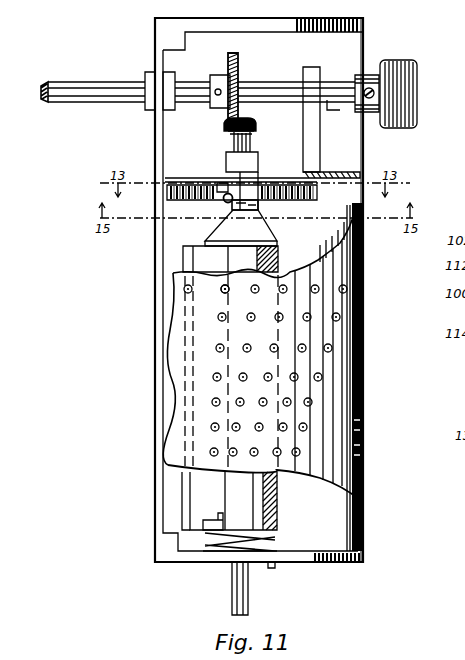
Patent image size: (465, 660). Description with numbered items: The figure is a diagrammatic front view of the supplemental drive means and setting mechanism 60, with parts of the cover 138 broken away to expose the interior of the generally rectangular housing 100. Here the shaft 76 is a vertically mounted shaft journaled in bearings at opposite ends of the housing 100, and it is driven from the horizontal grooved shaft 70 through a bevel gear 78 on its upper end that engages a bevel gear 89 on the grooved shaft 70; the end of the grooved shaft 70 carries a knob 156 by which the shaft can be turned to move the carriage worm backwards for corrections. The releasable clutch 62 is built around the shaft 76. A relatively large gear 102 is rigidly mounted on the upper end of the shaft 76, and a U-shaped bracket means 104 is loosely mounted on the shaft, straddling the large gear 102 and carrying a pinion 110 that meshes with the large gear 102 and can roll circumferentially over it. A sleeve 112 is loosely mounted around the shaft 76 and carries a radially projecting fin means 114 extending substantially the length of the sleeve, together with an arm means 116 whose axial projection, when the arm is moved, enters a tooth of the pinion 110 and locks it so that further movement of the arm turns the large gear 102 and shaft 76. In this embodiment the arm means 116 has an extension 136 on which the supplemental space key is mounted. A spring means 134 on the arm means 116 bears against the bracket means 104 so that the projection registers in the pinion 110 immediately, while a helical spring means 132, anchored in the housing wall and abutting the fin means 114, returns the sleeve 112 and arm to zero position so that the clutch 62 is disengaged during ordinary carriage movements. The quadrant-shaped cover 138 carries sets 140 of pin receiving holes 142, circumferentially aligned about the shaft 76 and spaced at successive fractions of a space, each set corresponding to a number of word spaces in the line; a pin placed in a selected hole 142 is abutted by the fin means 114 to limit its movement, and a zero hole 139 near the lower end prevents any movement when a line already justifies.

The grooved shaft 70 is at (60, 92).
The bevel gear 89 is at (239, 65).
The knob 156 is at (420, 83).
The bevel gear 78 is at (255, 127).
The arm means 116 is at (252, 166).
The pinion 110 is at (259, 173).
The bracket means 104 is at (231, 189).
The large gear 102 is at (318, 196).
The releasable clutch 62 is at (268, 208).
The spring means 134 is at (268, 222).
The extension 136 is at (226, 201).
The zero hole 139 is at (190, 292).
The pin receiving holes 142 is at (227, 292).
The housing 100 is at (153, 363).
The setting mechanism 60 is at (363, 388).
The sets of holes 140 is at (362, 448).
The fin means 114 is at (183, 495).
The sleeve 112 is at (277, 503).
The cover 138 is at (348, 488).
The helical spring means 132 is at (208, 547).
The shaft 76 is at (250, 584).